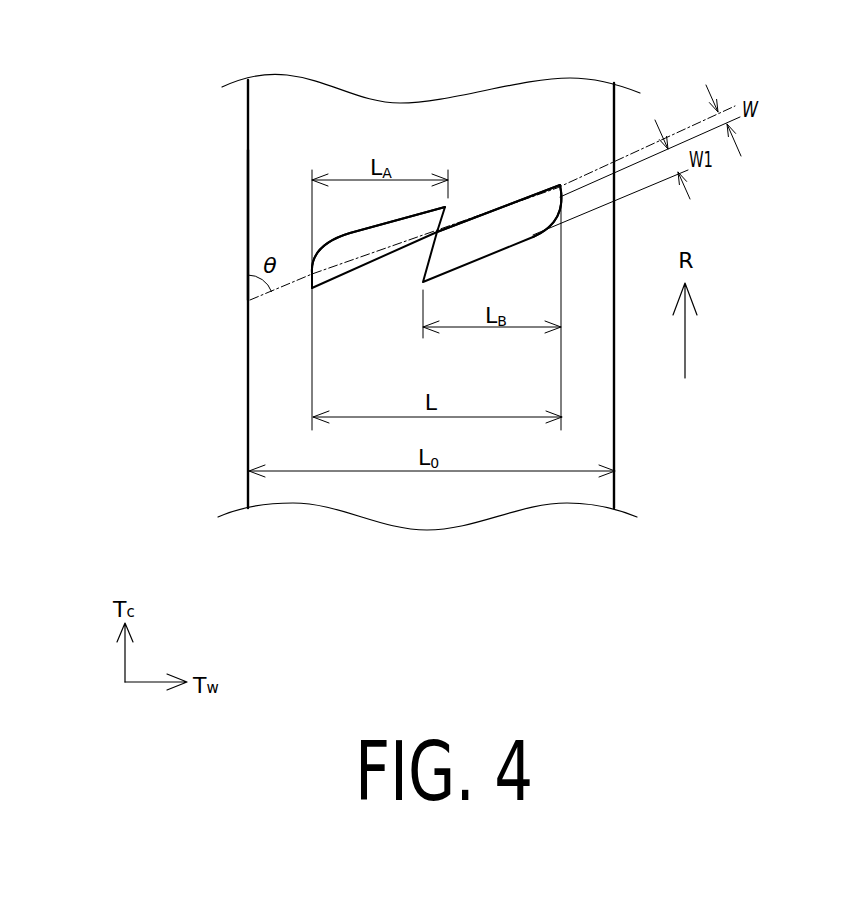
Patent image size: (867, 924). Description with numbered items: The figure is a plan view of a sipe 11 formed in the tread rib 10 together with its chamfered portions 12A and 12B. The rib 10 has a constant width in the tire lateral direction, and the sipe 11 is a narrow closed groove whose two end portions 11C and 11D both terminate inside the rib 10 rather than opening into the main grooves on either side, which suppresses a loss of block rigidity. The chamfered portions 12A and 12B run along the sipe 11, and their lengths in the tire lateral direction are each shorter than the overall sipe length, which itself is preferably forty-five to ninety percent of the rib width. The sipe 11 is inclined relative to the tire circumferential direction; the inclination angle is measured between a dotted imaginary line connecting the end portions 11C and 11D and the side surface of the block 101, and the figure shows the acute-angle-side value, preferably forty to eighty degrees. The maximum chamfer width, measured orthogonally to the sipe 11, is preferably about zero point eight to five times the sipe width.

The rib 10 is at (628, 558).
The block 101 is at (290, 200).
The sipe 11 is at (472, 218).
The end portion 11C is at (555, 190).
The end portion 11D is at (336, 279).
The chamfered portion 12A is at (376, 241).
The chamfered portion 12B is at (520, 210).